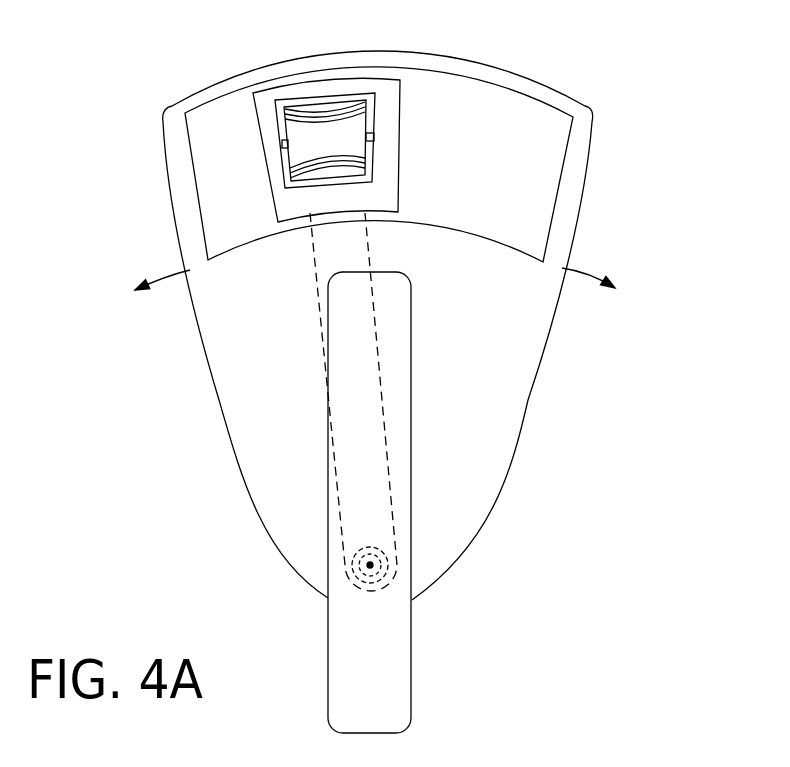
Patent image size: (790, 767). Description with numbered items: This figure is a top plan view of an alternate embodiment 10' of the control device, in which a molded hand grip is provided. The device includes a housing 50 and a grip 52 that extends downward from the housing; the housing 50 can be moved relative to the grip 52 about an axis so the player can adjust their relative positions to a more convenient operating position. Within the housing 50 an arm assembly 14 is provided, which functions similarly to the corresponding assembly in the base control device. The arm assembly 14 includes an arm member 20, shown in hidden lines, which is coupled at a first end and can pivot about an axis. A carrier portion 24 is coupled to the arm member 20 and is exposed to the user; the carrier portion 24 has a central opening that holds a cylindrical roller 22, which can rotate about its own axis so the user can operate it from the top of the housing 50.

The alternate embodiment of the control device 10' is at (438, 370).
The arm assembly 14 is at (410, 183).
The arm member 20 is at (363, 488).
The cylindrical roller 22 is at (325, 128).
The carrier portion 24 is at (390, 110).
The housing 50 is at (505, 432).
The grip 52 is at (395, 683).